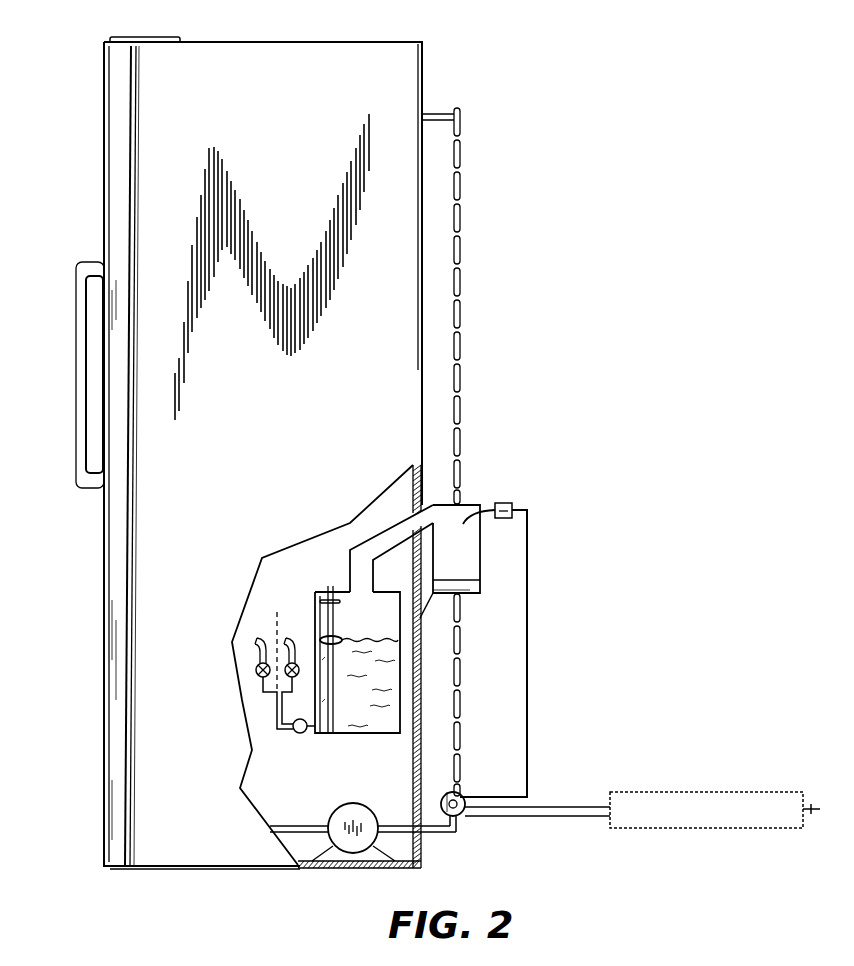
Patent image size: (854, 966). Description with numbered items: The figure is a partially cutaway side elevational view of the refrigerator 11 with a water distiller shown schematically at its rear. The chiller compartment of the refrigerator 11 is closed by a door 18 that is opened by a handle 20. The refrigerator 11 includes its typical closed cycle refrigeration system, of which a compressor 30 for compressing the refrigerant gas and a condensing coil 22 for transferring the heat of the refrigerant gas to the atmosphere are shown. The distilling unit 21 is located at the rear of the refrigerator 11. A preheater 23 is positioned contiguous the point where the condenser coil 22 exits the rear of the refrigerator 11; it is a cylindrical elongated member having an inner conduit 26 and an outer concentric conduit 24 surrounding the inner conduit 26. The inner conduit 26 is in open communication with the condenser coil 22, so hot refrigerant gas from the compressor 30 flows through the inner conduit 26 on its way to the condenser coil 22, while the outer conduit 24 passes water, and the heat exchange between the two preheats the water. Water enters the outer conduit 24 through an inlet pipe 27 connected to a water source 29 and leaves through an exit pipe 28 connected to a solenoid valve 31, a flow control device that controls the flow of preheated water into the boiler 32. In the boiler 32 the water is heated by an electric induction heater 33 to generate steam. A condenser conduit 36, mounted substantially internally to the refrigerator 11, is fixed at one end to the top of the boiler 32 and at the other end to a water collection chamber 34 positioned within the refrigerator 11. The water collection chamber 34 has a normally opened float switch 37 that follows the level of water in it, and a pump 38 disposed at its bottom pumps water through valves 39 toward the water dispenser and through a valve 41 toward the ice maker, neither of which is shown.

The refrigerator 11 is at (372, 28).
The door 18 is at (100, 742).
The handle 20 is at (74, 378).
The distilling unit 21 is at (607, 641).
The condensing coil 22 is at (462, 318).
The preheater 23 is at (462, 815).
The outer concentric conduit 24 is at (445, 792).
The inner conduit 26 is at (435, 826).
The inlet pipe 27 is at (553, 817).
The exit pipe 28 is at (490, 790).
The water source 29 is at (676, 792).
The compressor 30 is at (332, 862).
The solenoid valve 31 is at (506, 503).
The boiler 32 is at (468, 548).
The electric induction heater 33 is at (470, 590).
The water collection chamber 34 is at (345, 733).
The condenser conduit 36 is at (384, 532).
The float switch 37 is at (320, 598).
The pump 38 is at (297, 733).
The valves 39 is at (258, 667).
The valve 41 is at (278, 639).